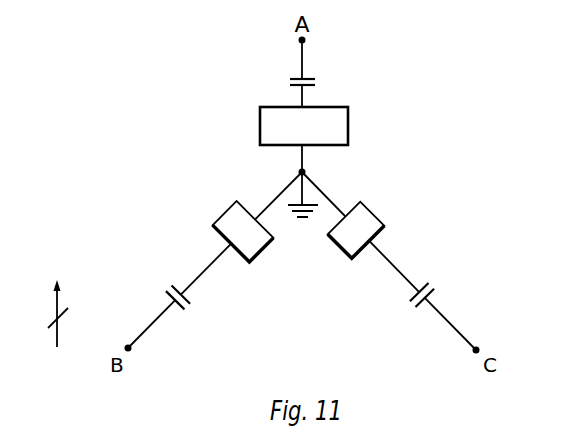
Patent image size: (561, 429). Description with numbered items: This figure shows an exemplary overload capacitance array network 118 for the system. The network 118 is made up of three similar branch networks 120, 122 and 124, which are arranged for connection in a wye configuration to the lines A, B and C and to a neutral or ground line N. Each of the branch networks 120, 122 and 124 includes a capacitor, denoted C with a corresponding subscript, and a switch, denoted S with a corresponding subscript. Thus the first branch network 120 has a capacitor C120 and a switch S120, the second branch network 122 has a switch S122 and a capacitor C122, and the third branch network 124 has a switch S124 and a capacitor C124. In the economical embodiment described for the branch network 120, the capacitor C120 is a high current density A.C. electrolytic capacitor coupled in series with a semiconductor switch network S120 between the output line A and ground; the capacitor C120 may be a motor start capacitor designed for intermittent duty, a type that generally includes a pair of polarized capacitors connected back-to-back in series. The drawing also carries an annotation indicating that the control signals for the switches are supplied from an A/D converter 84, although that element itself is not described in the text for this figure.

The overload capacitance array network 118 is at (491, 174).
The branch network 120 is at (305, 92).
The branch network 122 is at (215, 260).
The branch network 124 is at (398, 261).
The capacitor C120 is at (328, 82).
The semiconductor switch network S120 is at (358, 123).
The switch S122 is at (247, 263).
The capacitor C122 is at (194, 317).
The switch S124 is at (380, 238).
The capacitor C124 is at (448, 286).
The A/D converter (control source, off sheet) 84 is at (72, 312).